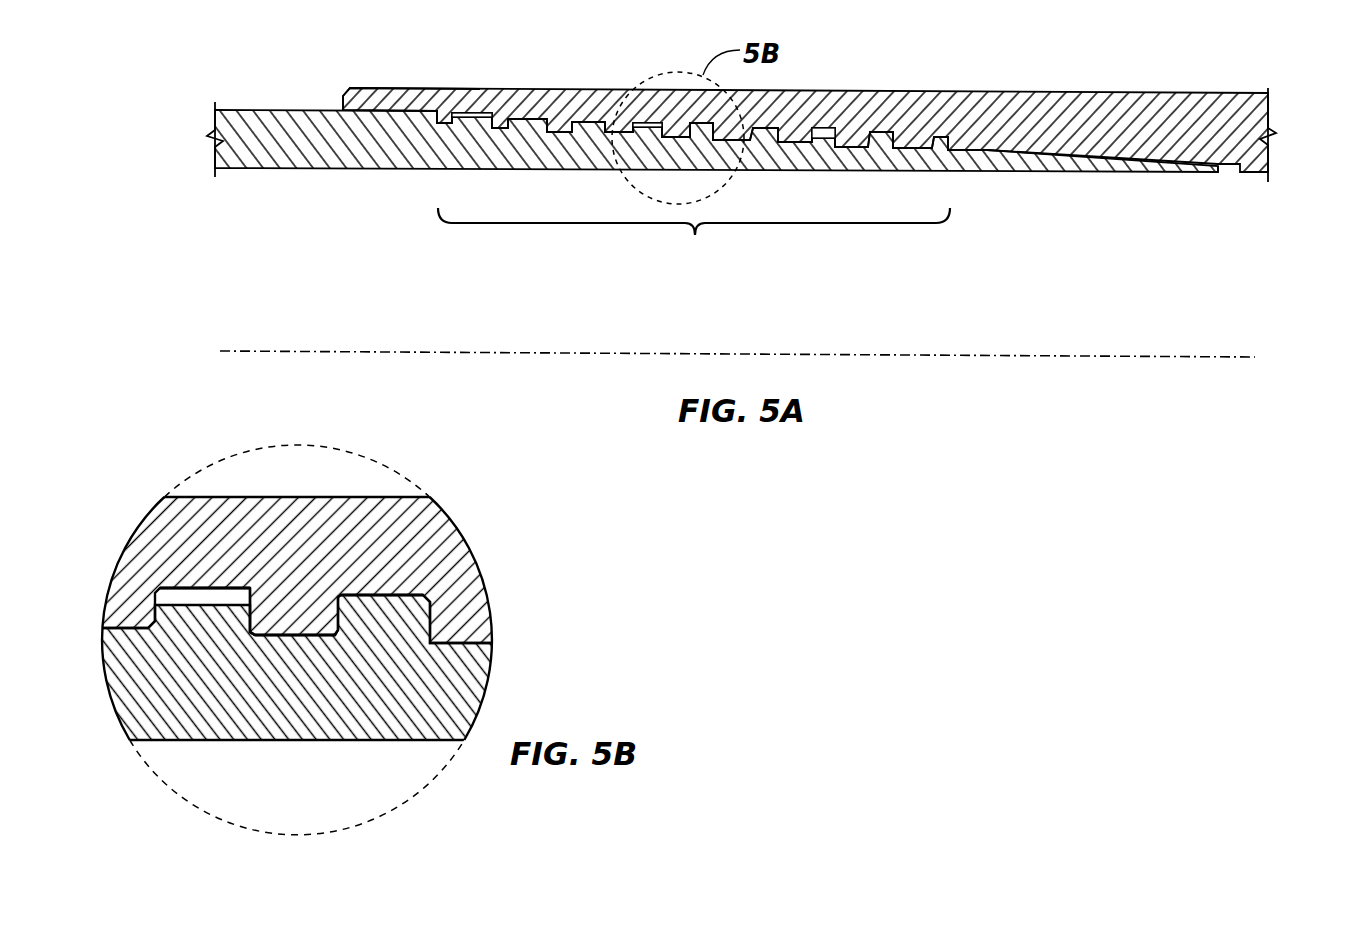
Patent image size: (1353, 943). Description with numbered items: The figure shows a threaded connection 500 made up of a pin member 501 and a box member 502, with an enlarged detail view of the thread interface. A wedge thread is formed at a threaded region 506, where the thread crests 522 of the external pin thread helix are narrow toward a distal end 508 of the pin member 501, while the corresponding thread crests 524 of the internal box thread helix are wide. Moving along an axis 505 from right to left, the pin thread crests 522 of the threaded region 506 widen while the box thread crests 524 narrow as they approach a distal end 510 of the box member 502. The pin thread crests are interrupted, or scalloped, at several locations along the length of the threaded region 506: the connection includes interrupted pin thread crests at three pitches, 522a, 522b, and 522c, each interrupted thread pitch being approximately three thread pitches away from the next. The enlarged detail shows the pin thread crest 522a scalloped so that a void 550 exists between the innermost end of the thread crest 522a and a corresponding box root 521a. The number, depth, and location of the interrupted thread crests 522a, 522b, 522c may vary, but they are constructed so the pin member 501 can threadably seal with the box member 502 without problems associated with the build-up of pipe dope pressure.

In FIG. 5A, the threaded connection 500 is at (1091, 56).
In FIG. 5A, the pin member 501 is at (320, 152).
In FIG. 5B, the pin member 501 is at (283, 717).
In FIG. 5A, the box member 502 is at (1063, 132).
In FIG. 5B, the box member 502 is at (275, 546).
In FIG. 5A, the axis 505 is at (1091, 354).
In FIG. 5A, the threaded region 506 is at (694, 240).
In FIG. 5A, the distal end of pin member 508 is at (1211, 175).
In FIG. 5A, the distal end of box member 510 is at (379, 88).
In FIG. 5B, the box root 521a is at (232, 585).
In FIG. 5B, the pin thread crests 522 is at (372, 593).
In FIG. 5A, the interrupted pin thread crest 522a is at (650, 124).
In FIG. 5B, the interrupted pin thread crest 522a is at (229, 607).
In FIG. 5A, the interrupted pin thread crest 522b is at (480, 115).
In FIG. 5A, the interrupted pin thread crest 522c is at (824, 128).
In FIG. 5B, the box thread crests 524 is at (297, 637).
In FIG. 5B, the void 550 is at (262, 590).